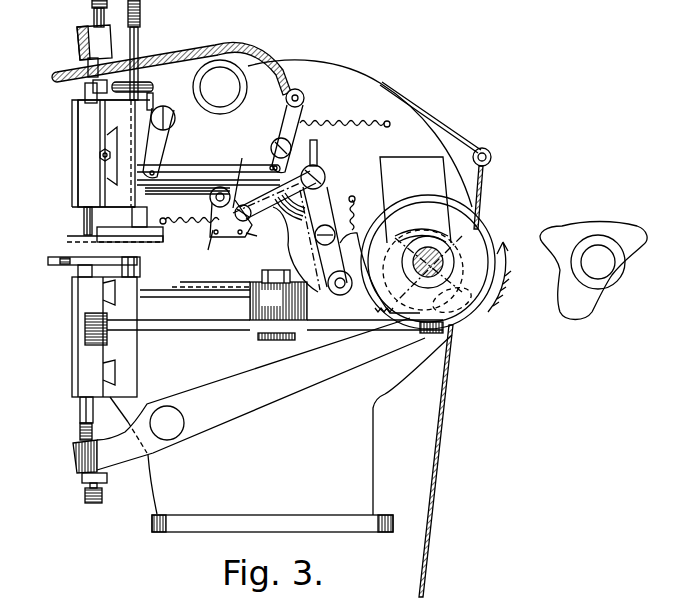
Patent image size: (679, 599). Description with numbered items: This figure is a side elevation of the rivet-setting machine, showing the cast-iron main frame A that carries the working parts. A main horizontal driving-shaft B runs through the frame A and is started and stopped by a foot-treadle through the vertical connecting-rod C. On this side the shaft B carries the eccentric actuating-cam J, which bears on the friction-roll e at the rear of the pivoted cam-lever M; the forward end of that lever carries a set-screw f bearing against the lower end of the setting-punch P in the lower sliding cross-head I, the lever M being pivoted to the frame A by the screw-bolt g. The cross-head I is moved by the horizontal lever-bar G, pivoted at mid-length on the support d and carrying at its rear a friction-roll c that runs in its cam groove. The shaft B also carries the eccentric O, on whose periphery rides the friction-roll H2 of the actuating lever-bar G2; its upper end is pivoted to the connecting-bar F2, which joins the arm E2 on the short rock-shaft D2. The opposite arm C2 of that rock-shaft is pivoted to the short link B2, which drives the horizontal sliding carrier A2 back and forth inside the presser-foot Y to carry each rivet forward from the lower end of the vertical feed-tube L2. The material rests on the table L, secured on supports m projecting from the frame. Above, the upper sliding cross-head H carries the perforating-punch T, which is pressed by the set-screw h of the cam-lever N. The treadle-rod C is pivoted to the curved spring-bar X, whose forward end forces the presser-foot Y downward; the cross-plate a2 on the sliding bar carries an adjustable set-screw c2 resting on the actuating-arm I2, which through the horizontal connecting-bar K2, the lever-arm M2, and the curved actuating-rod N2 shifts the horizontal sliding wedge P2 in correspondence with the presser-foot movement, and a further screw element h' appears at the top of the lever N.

The main frame A is at (310, 296).
The main horizontal driving-shaft B is at (445, 266).
The vertical connecting-rod C is at (480, 190).
The curved spring-bar X is at (456, 122).
The eccentric actuating-cam J is at (515, 271).
The curved actuating-rod N2 is at (178, 66).
The lever-arm M2 is at (330, 139).
The actuating lever-bar G2 is at (330, 190).
The friction-roll H2 is at (338, 290).
The eccentric O is at (346, 253).
The connecting-bar F2 is at (274, 196).
The short pivoted link B2 is at (231, 223).
The short rock-shaft D2 is at (203, 250).
The arm C2 is at (259, 238).
The arm E2 is at (241, 173).
The horizontal sliding carrier A2 is at (193, 236).
The horizontal connecting-bar K2 is at (208, 172).
The actuating-arm I2 is at (159, 142).
The perforating-punch T is at (82, 100).
The upper sliding cross-head H is at (106, 153).
The vertical feed-tube L2 is at (118, 217).
The cam-lever N is at (94, 51).
The screw h' is at (85, 13).
The set-screw h is at (60, 60).
The horizontal sliding wedge P2 is at (75, 87).
The cross-plate a2 is at (128, 94).
The adjustable set-screw c2 is at (157, 100).
The presser-foot Y is at (67, 237).
The table L is at (86, 264).
The supports m is at (138, 267).
The lower sliding cross-head I is at (104, 337).
The setting-punch P is at (93, 410).
The set-screw f is at (80, 435).
The cam-lever M is at (249, 410).
The screw-bolt g is at (167, 423).
The horizontal lever-bar G is at (216, 333).
The support d is at (278, 305).
The friction-roll c is at (434, 332).
The friction-roll e is at (467, 312).